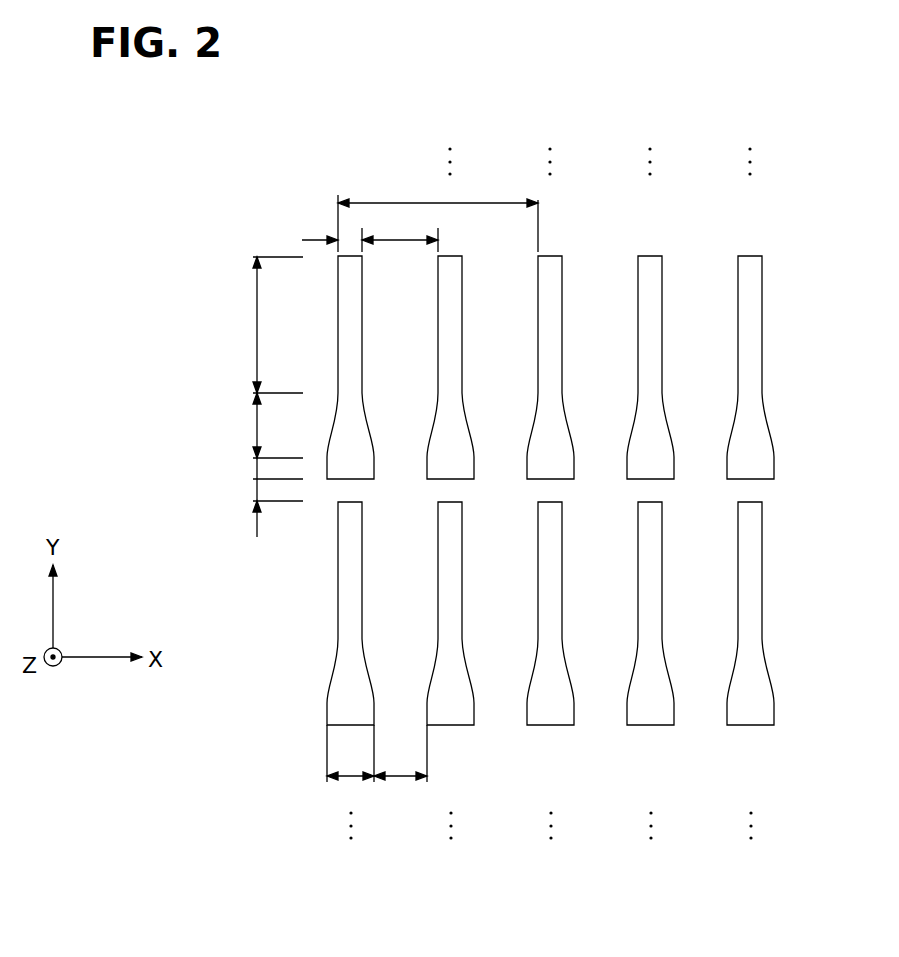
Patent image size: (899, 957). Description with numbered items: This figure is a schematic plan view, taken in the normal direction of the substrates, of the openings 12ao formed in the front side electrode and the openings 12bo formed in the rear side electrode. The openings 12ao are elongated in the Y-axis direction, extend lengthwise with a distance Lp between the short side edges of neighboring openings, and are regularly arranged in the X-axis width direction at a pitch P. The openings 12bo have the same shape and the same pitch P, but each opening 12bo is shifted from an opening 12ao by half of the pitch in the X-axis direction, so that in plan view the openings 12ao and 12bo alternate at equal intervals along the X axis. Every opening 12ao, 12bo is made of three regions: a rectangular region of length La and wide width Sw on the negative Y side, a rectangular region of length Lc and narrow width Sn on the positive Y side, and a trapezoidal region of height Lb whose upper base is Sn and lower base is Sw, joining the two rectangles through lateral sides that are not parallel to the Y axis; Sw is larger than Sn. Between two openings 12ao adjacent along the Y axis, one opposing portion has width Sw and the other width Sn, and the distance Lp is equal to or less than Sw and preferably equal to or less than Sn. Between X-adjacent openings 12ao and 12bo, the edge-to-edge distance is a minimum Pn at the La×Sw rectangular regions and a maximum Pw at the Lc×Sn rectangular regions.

The opening 12ao is at (581, 490).
The opening 12bo is at (581, 490).
The pitch P is at (438, 212).
The distance between opening edges Pw is at (400, 230).
The width Sn is at (319, 227).
The length Lc is at (262, 325).
The length Lb is at (262, 425).
The length La is at (262, 470).
The distance between the openings Lp is at (262, 507).
The width Sw is at (329, 758).
The distance between opening edges Pn is at (419, 758).